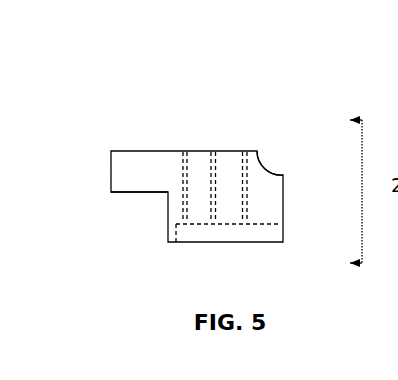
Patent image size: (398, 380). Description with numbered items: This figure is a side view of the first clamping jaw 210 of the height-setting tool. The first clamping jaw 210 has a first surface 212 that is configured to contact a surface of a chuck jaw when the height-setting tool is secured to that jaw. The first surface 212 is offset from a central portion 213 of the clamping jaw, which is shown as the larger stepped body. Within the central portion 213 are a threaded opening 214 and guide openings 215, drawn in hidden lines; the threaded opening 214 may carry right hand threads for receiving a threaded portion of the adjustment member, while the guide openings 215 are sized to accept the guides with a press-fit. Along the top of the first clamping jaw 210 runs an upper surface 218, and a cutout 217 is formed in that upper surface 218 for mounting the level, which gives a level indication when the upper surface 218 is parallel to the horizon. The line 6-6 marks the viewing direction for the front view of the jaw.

The first clamping jaw 210 is at (100, 138).
The first surface 212 is at (134, 195).
The central portion 213 is at (232, 97).
The threaded opening 214 is at (247, 150).
The guide openings 215 is at (187, 150).
The cutout 217 is at (272, 163).
The upper surface 218 is at (258, 151).
The line 6- 6 is at (346, 192).